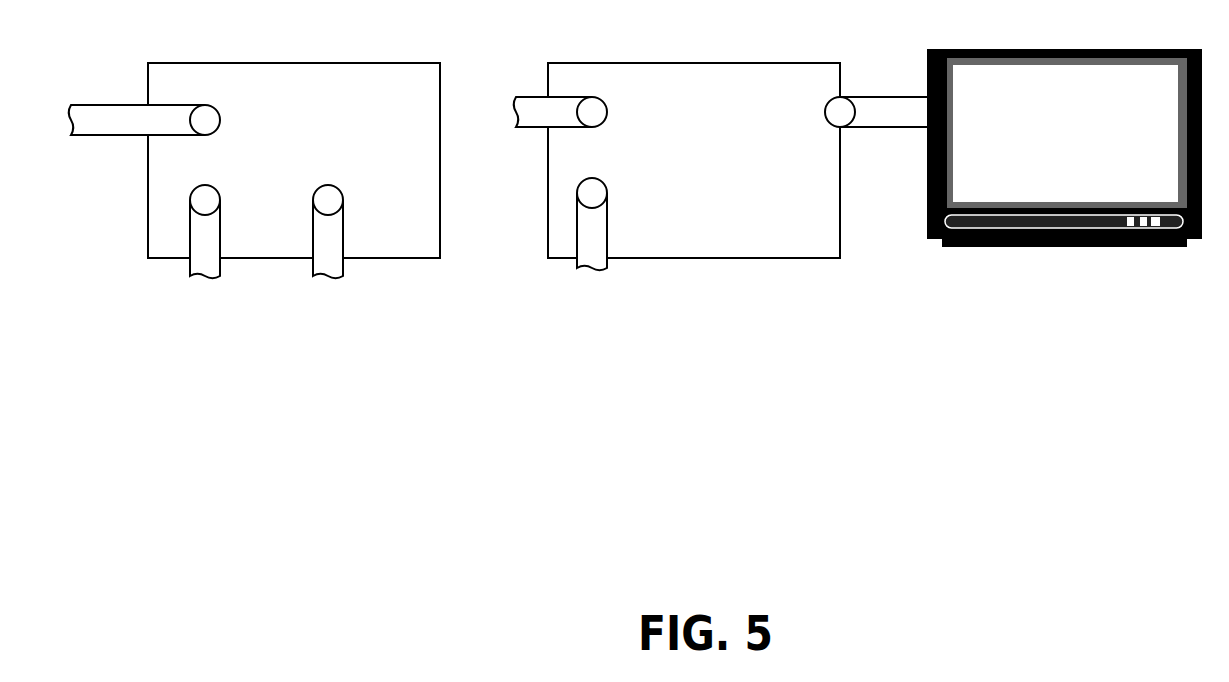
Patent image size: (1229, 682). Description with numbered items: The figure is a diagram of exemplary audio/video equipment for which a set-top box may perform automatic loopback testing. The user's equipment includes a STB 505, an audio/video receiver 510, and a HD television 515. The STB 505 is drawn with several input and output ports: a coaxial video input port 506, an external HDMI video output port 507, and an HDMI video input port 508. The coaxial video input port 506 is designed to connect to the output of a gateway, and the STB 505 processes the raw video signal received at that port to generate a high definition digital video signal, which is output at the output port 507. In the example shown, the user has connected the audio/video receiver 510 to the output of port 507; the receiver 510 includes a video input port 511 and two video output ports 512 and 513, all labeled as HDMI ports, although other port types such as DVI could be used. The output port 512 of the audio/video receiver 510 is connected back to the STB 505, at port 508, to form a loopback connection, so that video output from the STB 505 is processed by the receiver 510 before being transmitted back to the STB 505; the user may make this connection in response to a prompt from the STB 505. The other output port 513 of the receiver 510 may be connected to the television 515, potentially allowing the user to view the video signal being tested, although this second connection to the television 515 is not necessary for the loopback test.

The set-top box (STB) 505 is at (148, 63).
The coaxial video input port 506 is at (220, 122).
The external HDMI video output port 507 is at (220, 202).
The HDMI video input port 508 is at (343, 202).
The audio/video receiver 510 is at (548, 63).
The video input port 511 is at (607, 195).
The video output port 512 is at (607, 115).
The video output port 513 is at (840, 127).
The HD television 515 is at (927, 49).